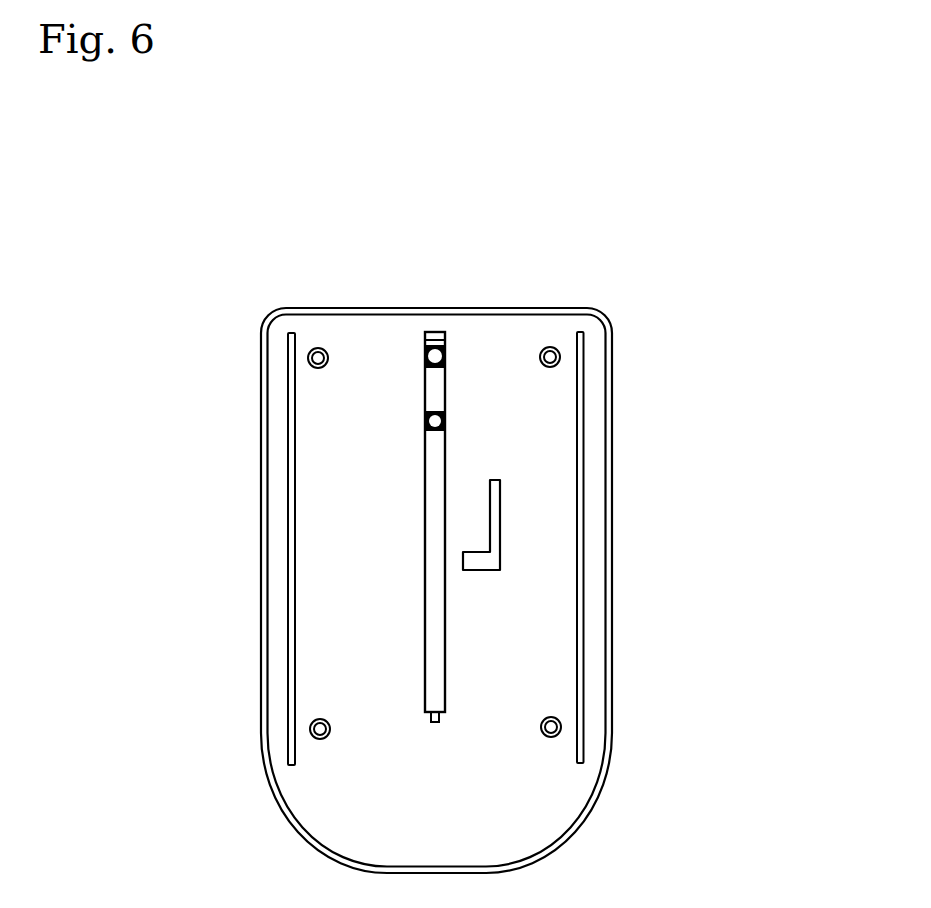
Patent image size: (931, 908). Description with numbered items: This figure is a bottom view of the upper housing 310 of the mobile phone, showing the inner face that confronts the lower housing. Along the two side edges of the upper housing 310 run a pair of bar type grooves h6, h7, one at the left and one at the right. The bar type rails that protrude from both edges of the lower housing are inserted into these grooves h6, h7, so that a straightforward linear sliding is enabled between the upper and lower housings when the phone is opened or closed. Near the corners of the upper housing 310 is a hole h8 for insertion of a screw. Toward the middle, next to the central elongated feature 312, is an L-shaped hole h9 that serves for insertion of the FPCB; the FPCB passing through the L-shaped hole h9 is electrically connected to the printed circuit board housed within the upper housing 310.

The upper housing 310 is at (640, 356).
The central guide slot 312 is at (433, 497).
The bar type groove h6 is at (288, 606).
The bar type groove h7 is at (576, 621).
The hole for insertion of a screw h8 is at (319, 348).
The L-shaped hole h9 is at (497, 521).